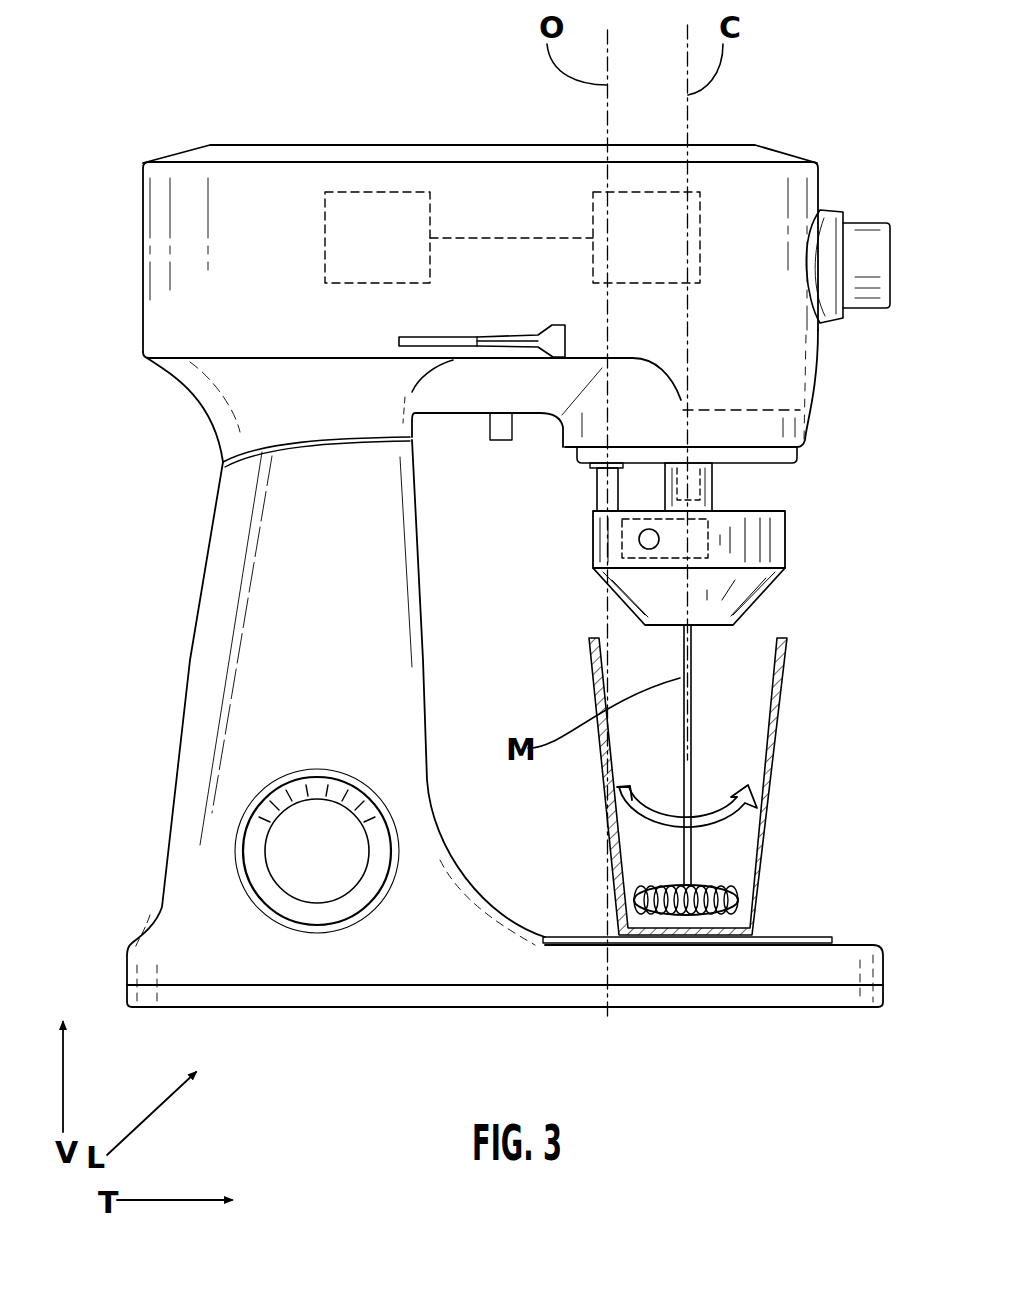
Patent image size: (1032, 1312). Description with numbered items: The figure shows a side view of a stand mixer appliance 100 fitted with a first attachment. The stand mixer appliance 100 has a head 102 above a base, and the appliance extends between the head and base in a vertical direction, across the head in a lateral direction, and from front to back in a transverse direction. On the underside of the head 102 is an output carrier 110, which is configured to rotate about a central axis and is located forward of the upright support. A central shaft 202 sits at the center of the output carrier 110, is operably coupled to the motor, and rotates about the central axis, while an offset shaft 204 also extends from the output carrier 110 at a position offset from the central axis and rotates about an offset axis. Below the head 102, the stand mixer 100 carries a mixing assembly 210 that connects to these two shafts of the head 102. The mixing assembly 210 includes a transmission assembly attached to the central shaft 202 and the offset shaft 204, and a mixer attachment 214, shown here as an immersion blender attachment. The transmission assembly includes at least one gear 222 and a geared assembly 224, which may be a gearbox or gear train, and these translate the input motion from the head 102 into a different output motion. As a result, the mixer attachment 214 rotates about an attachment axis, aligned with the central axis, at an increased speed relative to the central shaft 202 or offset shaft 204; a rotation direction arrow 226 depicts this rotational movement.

The stand mixer appliance 100 is at (176, 89).
The head 102 is at (296, 145).
The output carrier 110 is at (803, 447).
The central shaft 202 is at (705, 490).
The offset shaft 204 is at (597, 488).
The mixing assembly 210 is at (596, 607).
The mixer attachment 214 is at (693, 768).
The gear 222 is at (640, 542).
The geared assembly 224 is at (710, 538).
The rotation direction arrow 226 is at (783, 850).